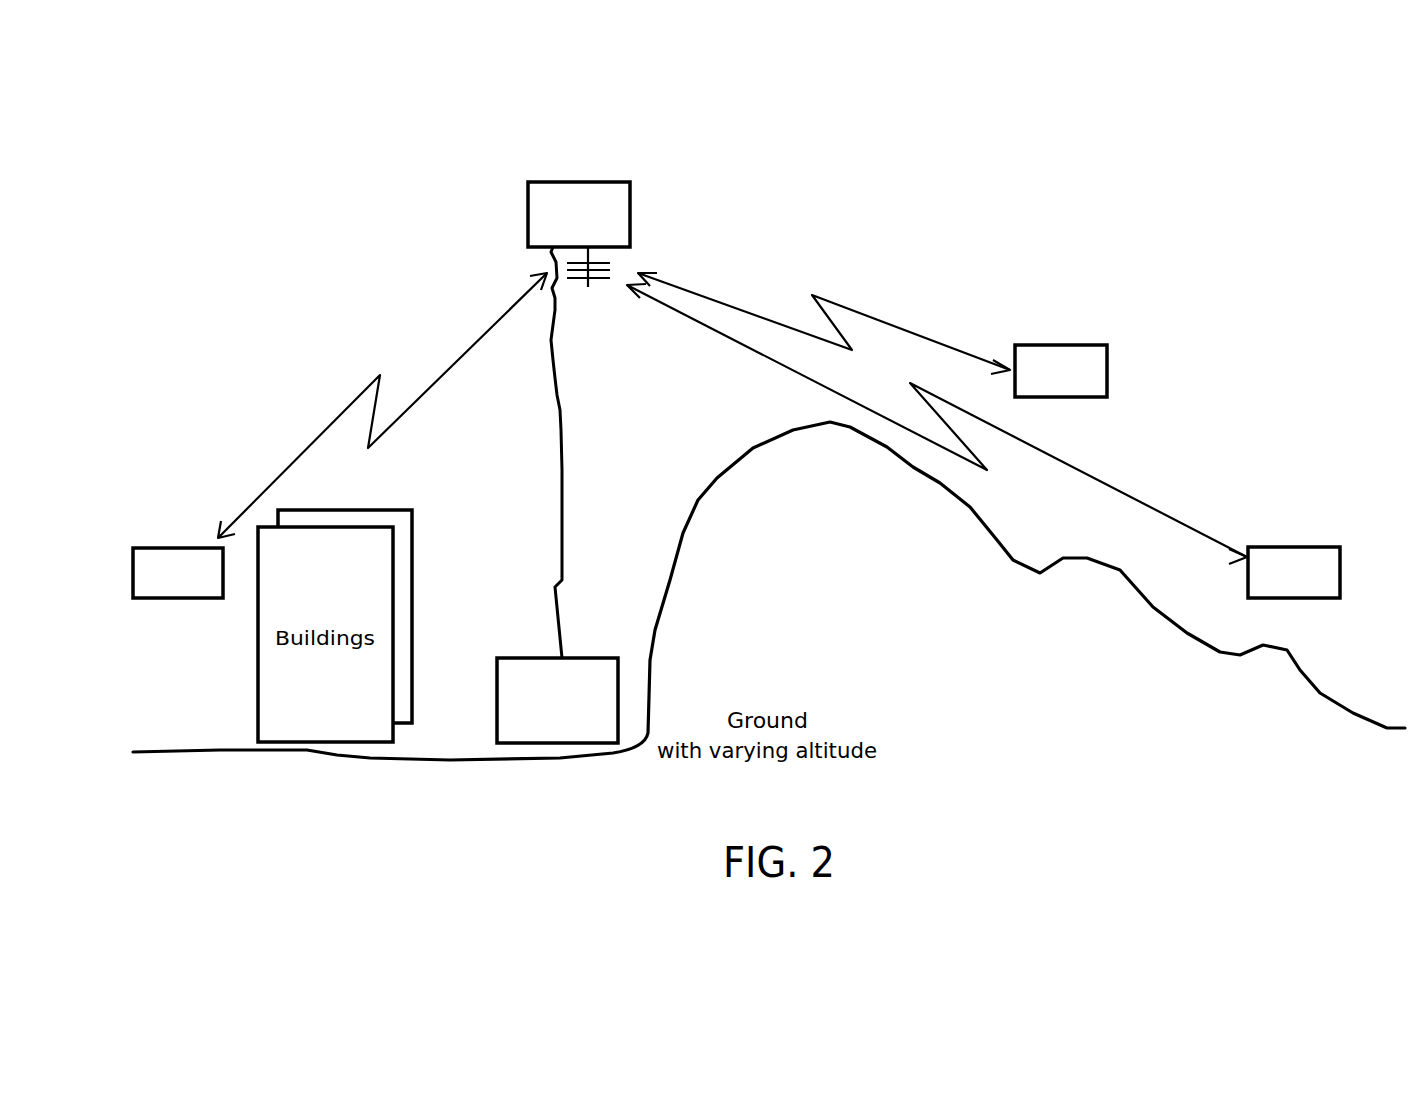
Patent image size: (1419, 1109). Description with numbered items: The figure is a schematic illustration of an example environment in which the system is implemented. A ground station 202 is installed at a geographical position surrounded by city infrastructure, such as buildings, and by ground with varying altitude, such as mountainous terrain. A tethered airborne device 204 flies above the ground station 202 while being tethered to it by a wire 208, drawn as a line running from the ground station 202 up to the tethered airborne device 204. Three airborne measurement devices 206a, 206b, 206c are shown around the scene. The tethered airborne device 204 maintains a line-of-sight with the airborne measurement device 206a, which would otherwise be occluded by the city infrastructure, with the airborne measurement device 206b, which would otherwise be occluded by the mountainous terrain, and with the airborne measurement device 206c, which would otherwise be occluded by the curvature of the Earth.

The ground station 202 is at (557, 700).
The tethered airborne device 204 is at (579, 234).
The airborne measurement device 206a is at (340, 435).
The airborne measurement device 206b is at (872, 335).
The airborne measurement device 206c is at (983, 441).
The wire 208 is at (562, 517).